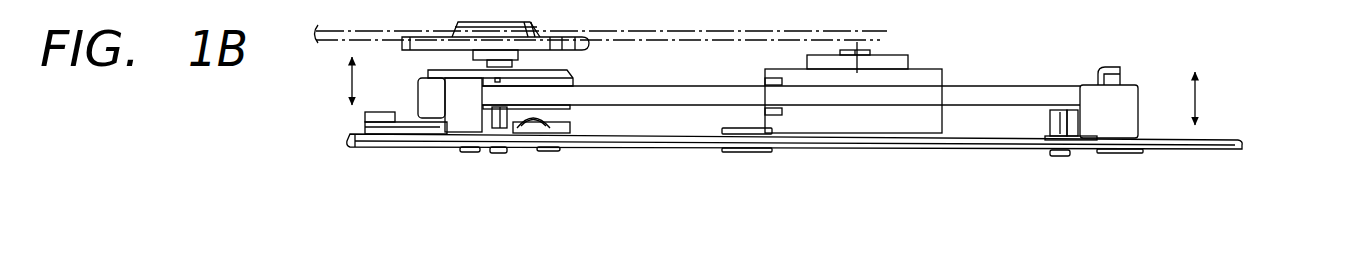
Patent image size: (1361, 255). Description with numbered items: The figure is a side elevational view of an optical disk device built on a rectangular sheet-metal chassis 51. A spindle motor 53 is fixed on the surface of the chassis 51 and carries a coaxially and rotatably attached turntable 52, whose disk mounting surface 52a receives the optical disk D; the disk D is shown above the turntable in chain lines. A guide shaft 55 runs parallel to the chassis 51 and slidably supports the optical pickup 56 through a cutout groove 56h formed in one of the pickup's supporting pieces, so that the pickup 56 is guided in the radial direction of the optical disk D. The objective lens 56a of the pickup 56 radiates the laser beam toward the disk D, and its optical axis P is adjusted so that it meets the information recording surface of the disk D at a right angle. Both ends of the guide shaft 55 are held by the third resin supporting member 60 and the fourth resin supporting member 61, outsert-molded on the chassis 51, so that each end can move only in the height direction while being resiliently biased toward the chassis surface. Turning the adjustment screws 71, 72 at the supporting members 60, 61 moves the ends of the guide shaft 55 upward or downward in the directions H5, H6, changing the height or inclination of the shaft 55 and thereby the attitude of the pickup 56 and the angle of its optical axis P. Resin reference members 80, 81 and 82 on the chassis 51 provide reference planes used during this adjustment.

The chassis 51 is at (631, 131).
The turntable 52 is at (585, 54).
The disk mounting surface 52a is at (560, 30).
The spindle motor 53 is at (431, 110).
The guide shaft 55 is at (687, 93).
The optical pickup 56 is at (946, 78).
The objective lens 56a is at (857, 42).
The cutout groove 56h is at (770, 102).
The third resin supporting member 60 is at (444, 86).
The fourth resin supporting member 61 is at (1141, 93).
The adjustment screw 71 is at (510, 111).
The adjustment screw 72 is at (1048, 128).
The reference member 80 is at (726, 130).
The reference member 81 is at (524, 120).
The reference member 82 is at (1073, 130).
The optical disk D is at (672, 33).
The optical axis P is at (859, 64).
The direction of movement H5 is at (351, 82).
The direction of movement H6 is at (1199, 72).